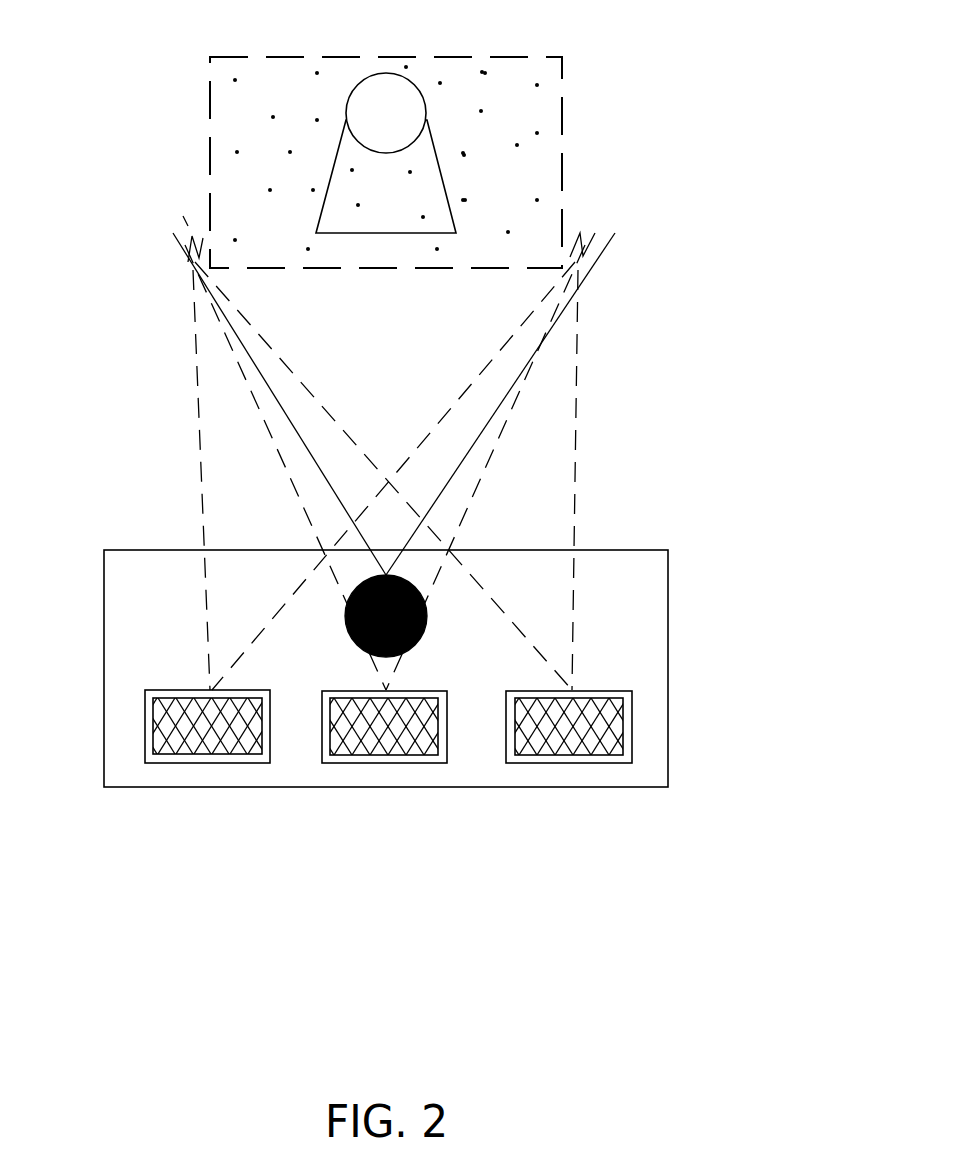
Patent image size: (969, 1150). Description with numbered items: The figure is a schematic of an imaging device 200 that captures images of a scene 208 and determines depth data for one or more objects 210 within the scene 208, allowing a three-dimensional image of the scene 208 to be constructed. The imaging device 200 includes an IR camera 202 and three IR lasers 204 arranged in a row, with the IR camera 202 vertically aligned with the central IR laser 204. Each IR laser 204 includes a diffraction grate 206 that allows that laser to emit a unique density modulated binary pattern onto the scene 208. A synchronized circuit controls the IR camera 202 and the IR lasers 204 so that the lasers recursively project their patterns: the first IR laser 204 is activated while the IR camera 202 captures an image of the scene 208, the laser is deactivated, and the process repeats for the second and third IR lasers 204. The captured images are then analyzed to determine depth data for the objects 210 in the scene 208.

The imaging device 200 is at (104, 616).
The IR camera 202 is at (405, 648).
The IR laser 204 is at (182, 763).
The diffraction grate 206 is at (243, 750).
The scene 208 is at (562, 125).
The object 210 is at (386, 112).